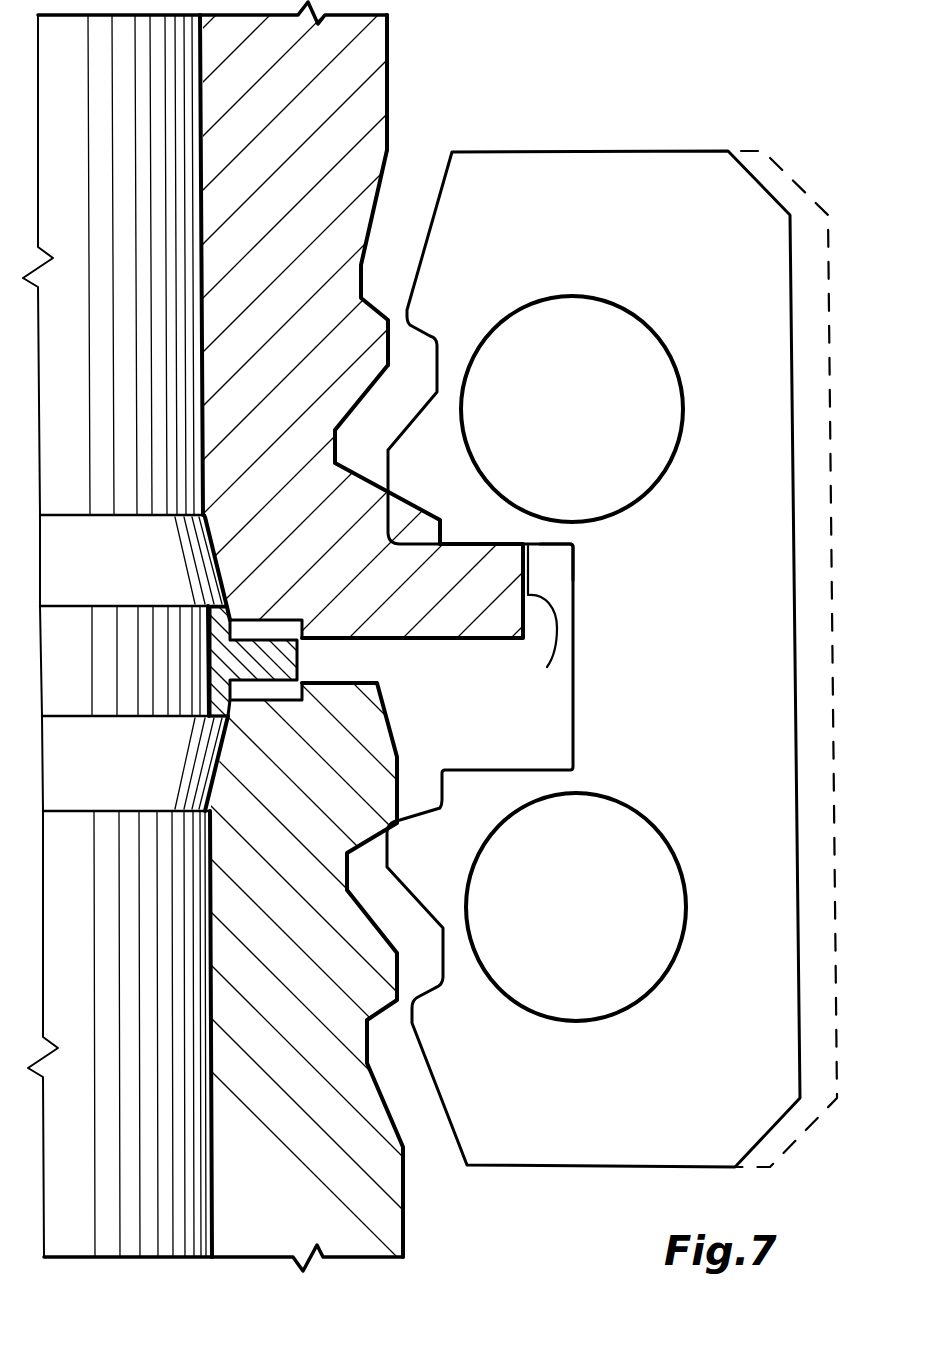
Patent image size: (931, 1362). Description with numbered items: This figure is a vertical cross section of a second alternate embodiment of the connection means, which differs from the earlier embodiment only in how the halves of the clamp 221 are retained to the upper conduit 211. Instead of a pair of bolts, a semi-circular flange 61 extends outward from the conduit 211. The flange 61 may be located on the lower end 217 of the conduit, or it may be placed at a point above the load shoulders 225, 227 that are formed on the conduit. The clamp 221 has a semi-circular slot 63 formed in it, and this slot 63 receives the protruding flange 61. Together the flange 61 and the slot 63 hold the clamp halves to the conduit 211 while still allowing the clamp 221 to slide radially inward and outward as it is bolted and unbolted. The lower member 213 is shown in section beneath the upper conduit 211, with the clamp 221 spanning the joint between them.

The upper conduit 211 is at (465, 601).
The second coupling body 213 is at (317, 1215).
The lower end 217 is at (332, 640).
The clamp 221 is at (612, 626).
The load shoulder 225 is at (340, 462).
The load shoulder 227 is at (366, 304).
The semi-circular flange 61 is at (538, 623).
The semi-circular slot 63 is at (532, 548).